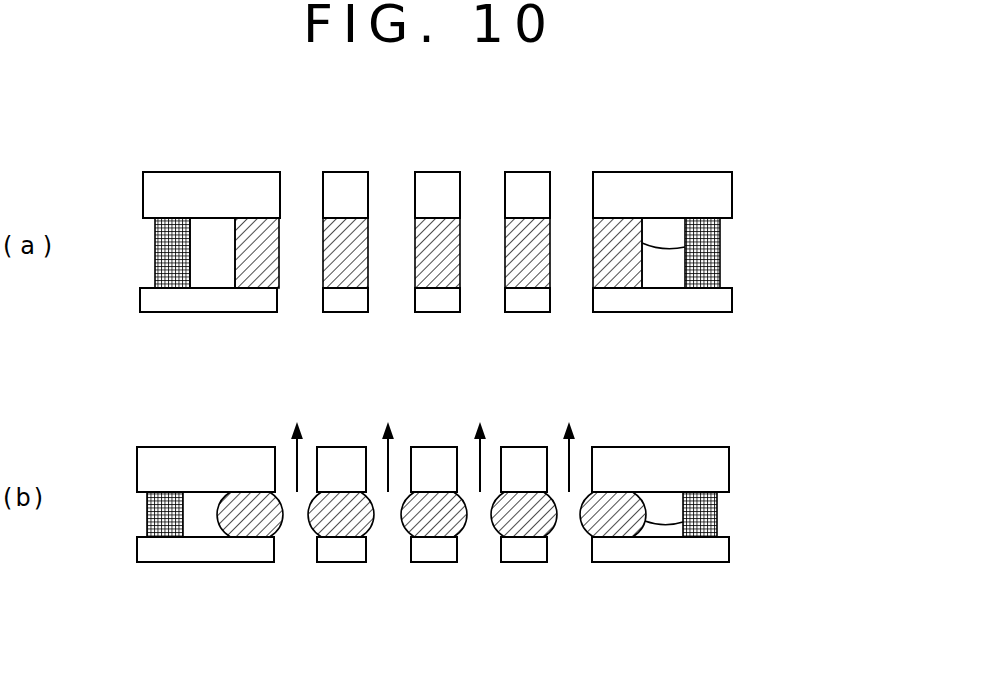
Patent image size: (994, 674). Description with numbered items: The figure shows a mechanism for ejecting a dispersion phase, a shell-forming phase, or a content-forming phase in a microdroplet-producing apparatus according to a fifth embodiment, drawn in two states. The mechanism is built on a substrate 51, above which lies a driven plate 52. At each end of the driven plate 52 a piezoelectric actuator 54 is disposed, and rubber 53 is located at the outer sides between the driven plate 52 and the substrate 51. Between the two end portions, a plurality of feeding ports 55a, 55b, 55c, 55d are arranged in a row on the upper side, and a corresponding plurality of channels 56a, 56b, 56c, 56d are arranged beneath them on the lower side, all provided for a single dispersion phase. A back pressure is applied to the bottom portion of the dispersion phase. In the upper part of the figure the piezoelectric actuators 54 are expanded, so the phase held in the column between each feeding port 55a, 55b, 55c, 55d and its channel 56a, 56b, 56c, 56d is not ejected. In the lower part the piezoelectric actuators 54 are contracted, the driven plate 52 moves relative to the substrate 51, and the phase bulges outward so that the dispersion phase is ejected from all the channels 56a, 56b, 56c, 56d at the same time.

The substrate 51 is at (732, 293).
The driven plate 52 is at (732, 178).
The rubber 53 is at (720, 220).
The piezoelectric actuators 54 is at (720, 250).
The feeding port 55a is at (302, 195).
The feeding port 55b is at (393, 195).
The feeding port 55c is at (483, 195).
The feeding port 55d is at (572, 195).
The channel 56a is at (302, 273).
The channel 56b is at (393, 273).
The channel 56c is at (483, 273).
The channel 56d is at (572, 273).